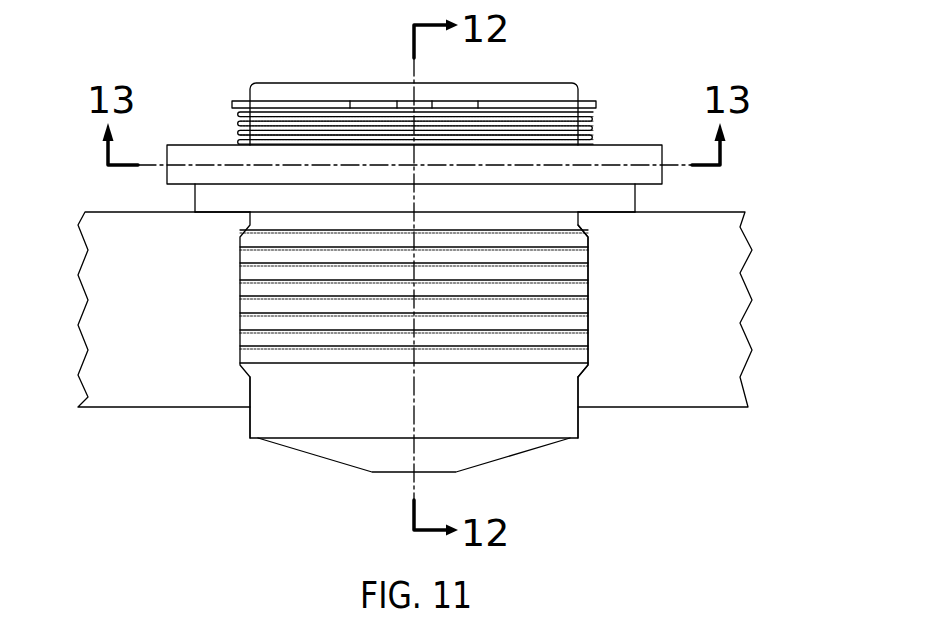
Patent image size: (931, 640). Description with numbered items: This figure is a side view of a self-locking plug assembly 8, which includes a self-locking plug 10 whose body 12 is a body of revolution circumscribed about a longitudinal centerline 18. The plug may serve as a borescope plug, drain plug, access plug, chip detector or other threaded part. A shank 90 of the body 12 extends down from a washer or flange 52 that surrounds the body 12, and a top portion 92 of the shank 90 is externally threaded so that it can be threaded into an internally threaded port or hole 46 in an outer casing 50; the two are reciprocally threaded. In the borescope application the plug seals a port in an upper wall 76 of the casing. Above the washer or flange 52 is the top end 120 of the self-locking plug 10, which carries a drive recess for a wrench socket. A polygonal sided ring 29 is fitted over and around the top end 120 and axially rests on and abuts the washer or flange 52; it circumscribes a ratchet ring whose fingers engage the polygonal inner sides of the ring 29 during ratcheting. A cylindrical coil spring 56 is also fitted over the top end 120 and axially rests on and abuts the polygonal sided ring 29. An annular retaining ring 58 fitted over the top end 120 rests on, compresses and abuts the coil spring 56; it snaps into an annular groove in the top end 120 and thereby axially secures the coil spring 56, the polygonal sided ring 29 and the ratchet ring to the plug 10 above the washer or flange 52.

The self-locking plug assembly 8 is at (174, 524).
The self-locking plug 10 is at (579, 425).
The body 12 is at (520, 459).
The longitudinal centerline 18 is at (413, 72).
The polygonal sided ring 29 is at (196, 145).
The internally threaded port or hole 46 is at (243, 294).
The outer casing 50 is at (87, 212).
The washer or flange 52 is at (636, 198).
The coil spring 56 is at (591, 129).
The annular retaining ring 58 is at (579, 100).
The upper wall 76 is at (745, 211).
The shank 90 is at (580, 395).
The externally threaded top portion of the shank 92 is at (589, 305).
The top end 120 is at (298, 82).